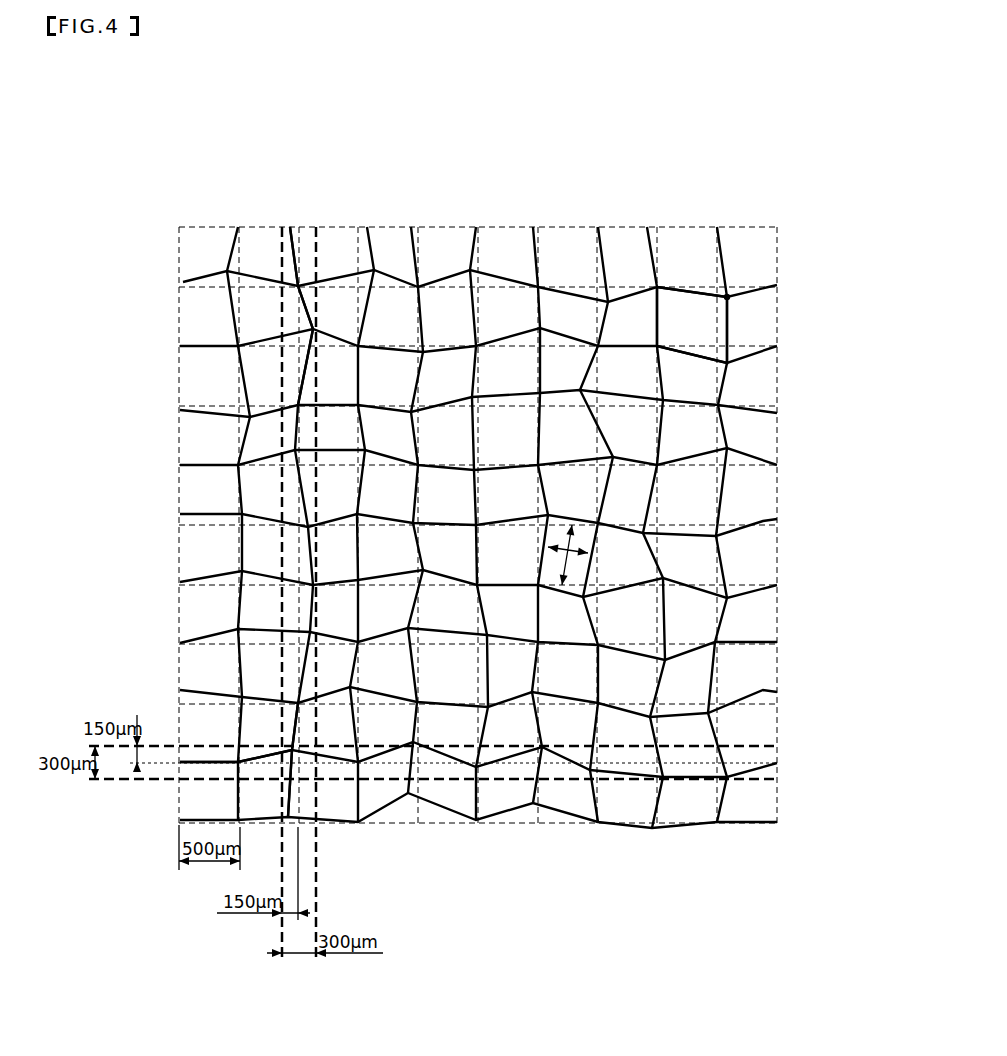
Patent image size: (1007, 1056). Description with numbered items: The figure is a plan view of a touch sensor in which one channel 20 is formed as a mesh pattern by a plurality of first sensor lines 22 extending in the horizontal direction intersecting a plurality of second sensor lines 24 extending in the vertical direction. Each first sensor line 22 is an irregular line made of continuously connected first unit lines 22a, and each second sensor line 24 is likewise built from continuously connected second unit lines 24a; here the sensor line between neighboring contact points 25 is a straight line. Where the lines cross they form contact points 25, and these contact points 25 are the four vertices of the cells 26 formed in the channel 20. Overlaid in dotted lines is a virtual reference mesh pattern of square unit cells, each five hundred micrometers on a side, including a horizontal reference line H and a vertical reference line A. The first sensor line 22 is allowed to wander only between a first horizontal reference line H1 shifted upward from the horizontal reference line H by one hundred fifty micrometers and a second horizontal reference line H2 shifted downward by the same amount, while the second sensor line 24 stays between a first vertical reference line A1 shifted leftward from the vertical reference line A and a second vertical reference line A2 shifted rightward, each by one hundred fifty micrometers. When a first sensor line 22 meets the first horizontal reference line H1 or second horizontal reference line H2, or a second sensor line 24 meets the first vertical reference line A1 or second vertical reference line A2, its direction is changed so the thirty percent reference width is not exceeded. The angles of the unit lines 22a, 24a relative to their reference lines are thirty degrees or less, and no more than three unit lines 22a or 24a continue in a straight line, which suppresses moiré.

The channel 20 is at (457, 203).
The first sensor line 22 is at (752, 293).
The first unit line 22a is at (203, 762).
The second sensor line 24 is at (723, 267).
The second unit line 24a is at (292, 740).
The contact point 25 is at (729, 296).
The cell 26 is at (687, 313).
The vertical reference line A is at (293, 236).
The first vertical reference line A1 is at (282, 253).
The second vertical reference line A2 is at (318, 260).
The horizontal reference line H is at (735, 763).
The first horizontal reference line H1 is at (750, 746).
The second horizontal reference line H2 is at (752, 779).